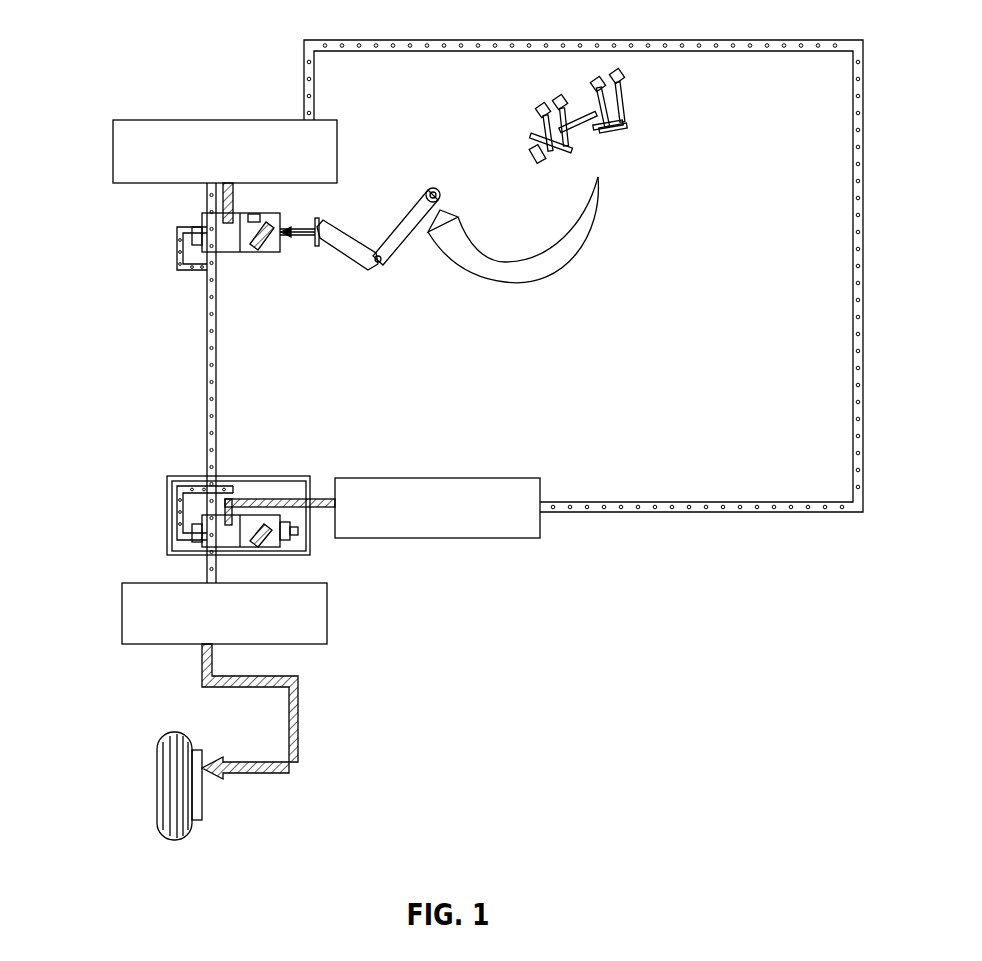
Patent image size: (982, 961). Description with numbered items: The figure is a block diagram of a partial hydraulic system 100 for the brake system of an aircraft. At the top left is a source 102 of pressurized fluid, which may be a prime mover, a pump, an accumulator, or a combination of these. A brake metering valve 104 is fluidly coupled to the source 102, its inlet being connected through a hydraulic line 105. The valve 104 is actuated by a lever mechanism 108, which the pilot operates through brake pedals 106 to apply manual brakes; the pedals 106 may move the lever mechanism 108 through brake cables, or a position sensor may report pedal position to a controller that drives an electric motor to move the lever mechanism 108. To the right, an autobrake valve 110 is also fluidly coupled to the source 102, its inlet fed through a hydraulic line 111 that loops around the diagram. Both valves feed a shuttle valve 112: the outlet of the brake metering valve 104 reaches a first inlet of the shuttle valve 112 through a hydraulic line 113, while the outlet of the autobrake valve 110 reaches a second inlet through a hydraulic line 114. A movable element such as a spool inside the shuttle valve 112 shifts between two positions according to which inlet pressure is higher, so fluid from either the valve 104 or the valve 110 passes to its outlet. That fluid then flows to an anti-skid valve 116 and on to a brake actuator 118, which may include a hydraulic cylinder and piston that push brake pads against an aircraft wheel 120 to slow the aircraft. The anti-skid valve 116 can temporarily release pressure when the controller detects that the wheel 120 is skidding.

The hydraulic system 100 is at (90, 90).
The source of pressurized fluid 102 is at (224, 120).
The brake metering valve 104 is at (194, 219).
The hydraulic line 105 is at (199, 193).
The brake pedals 106 is at (632, 100).
The lever mechanism 108 is at (407, 204).
The autobrake valve 110 is at (547, 532).
The hydraulic line 111 is at (870, 229).
The shuttle valve 112 is at (194, 523).
The hydraulic line 113 is at (171, 492).
The hydraulic line 114 is at (306, 523).
The anti-skid valve 116 is at (114, 624).
The brake actuator 118 is at (210, 813).
The aircraft wheel 120 is at (156, 786).